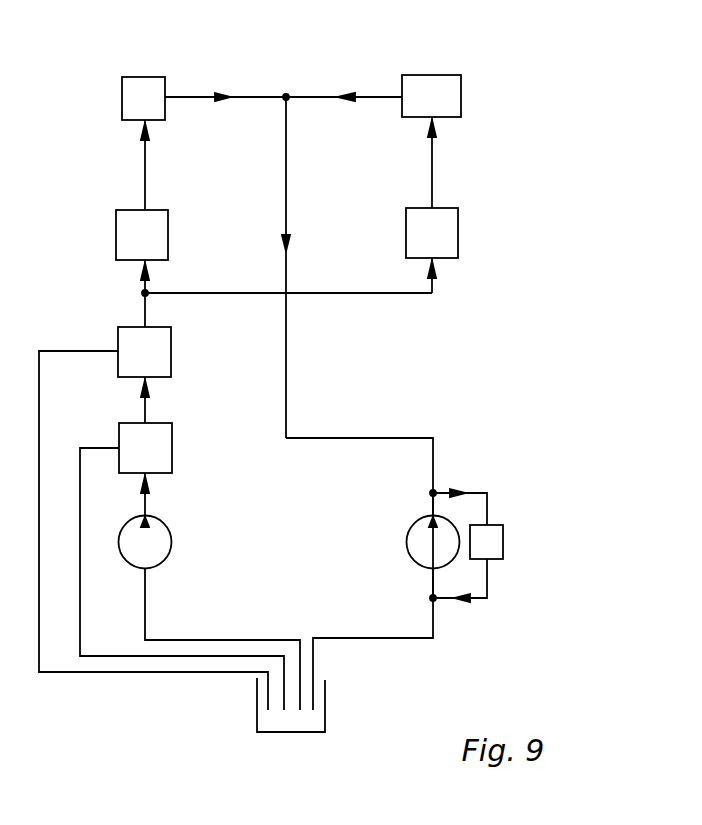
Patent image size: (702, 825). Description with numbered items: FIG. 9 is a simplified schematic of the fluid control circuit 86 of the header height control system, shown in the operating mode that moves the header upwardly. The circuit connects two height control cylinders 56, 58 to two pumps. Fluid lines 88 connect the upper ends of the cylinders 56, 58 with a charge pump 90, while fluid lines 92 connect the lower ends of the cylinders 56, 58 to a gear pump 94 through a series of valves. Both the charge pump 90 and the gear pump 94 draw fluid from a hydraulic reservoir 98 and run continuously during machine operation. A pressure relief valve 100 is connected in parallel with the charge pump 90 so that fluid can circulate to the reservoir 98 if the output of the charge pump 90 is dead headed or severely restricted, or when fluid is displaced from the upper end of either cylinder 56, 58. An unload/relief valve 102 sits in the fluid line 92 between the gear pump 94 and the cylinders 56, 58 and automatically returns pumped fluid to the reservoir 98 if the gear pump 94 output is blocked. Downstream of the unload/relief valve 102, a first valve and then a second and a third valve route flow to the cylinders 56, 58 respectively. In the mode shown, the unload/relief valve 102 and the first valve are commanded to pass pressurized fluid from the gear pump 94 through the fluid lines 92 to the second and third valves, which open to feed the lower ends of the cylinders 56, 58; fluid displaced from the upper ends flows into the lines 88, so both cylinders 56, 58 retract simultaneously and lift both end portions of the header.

The height control cylinder 56 is at (122, 95).
The height control cylinder 58 is at (461, 105).
The fluid control circuit 86 is at (481, 61).
The fluid lines 88 is at (252, 93).
The charge pump 90 is at (407, 541).
The fluid lines 92 is at (147, 406).
The gear pump 94 is at (165, 560).
The hydraulic reservoir 98 is at (326, 705).
The pressure relief valve 100 is at (503, 545).
The unload/relief valve 102 is at (172, 458).